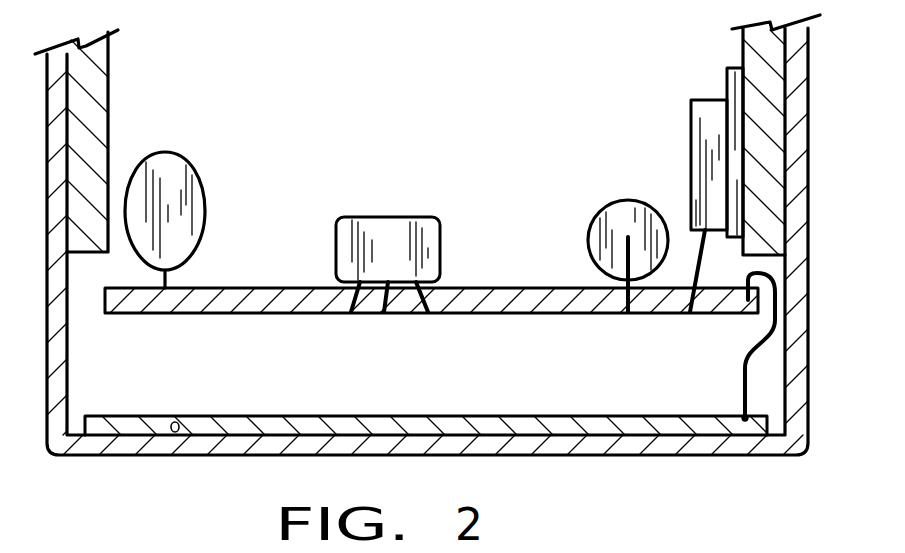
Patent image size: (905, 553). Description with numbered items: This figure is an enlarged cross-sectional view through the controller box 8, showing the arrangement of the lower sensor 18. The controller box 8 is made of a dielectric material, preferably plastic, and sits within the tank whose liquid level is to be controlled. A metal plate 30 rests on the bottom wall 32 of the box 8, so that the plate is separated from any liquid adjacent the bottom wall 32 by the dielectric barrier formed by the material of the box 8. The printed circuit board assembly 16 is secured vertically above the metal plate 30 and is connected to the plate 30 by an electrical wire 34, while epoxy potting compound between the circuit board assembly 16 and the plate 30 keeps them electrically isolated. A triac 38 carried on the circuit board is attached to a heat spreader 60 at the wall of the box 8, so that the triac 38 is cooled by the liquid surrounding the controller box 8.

The controller box 8 is at (812, 302).
The circuit board assembly 16 is at (509, 210).
The lower sensor 18 is at (376, 406).
The metal plate 30 is at (567, 427).
The bottom wall 32 is at (170, 434).
The electrical wire 34 is at (743, 373).
The triac 38 is at (703, 145).
The heat spreader 60 is at (93, 97).